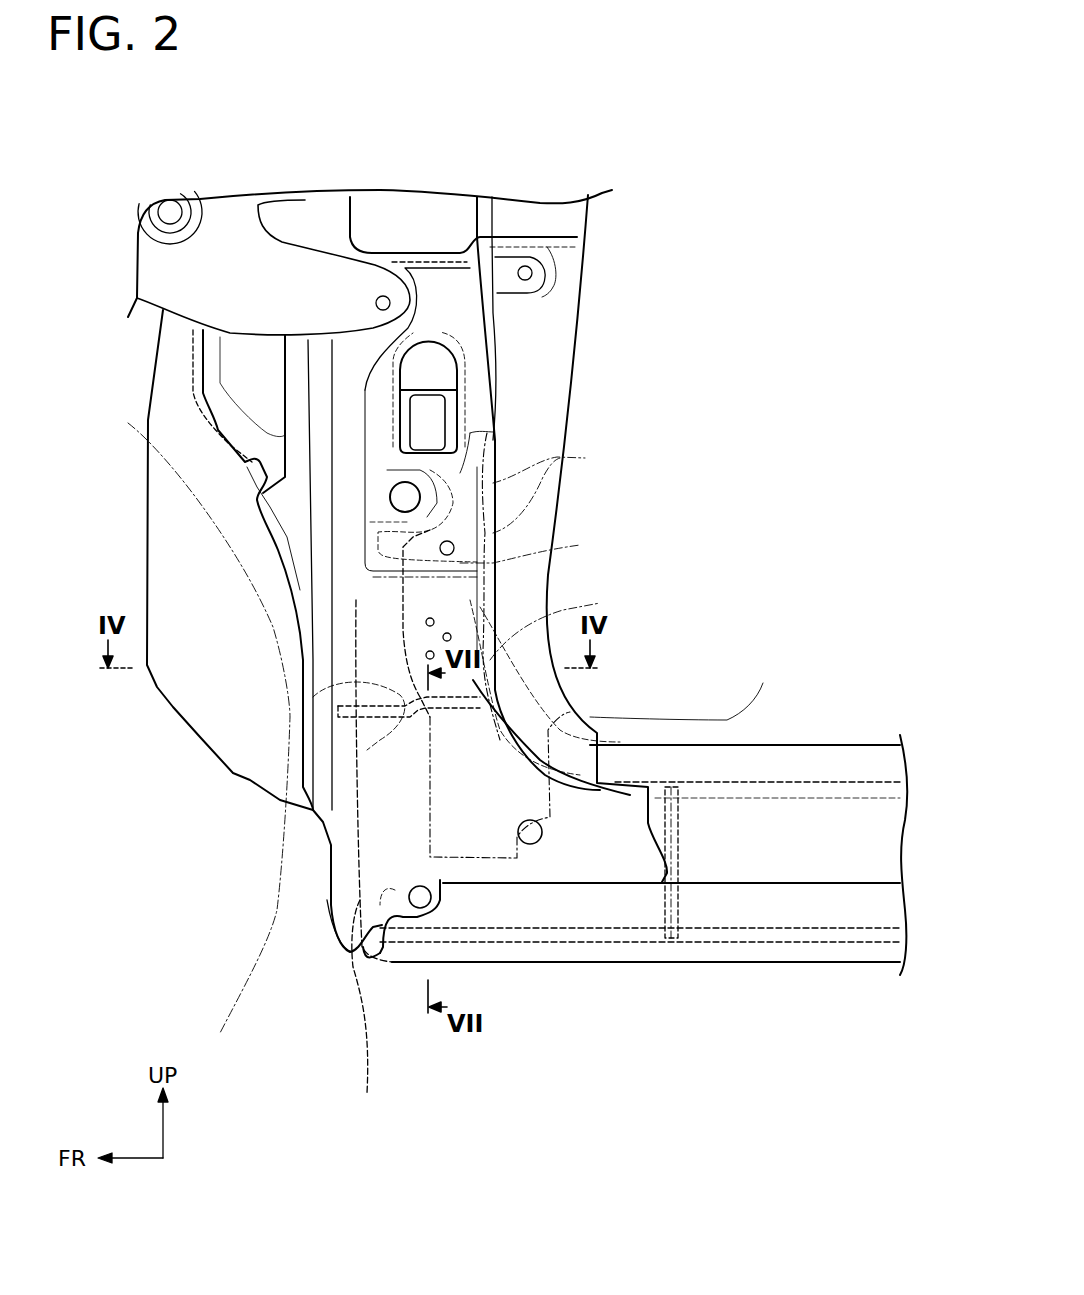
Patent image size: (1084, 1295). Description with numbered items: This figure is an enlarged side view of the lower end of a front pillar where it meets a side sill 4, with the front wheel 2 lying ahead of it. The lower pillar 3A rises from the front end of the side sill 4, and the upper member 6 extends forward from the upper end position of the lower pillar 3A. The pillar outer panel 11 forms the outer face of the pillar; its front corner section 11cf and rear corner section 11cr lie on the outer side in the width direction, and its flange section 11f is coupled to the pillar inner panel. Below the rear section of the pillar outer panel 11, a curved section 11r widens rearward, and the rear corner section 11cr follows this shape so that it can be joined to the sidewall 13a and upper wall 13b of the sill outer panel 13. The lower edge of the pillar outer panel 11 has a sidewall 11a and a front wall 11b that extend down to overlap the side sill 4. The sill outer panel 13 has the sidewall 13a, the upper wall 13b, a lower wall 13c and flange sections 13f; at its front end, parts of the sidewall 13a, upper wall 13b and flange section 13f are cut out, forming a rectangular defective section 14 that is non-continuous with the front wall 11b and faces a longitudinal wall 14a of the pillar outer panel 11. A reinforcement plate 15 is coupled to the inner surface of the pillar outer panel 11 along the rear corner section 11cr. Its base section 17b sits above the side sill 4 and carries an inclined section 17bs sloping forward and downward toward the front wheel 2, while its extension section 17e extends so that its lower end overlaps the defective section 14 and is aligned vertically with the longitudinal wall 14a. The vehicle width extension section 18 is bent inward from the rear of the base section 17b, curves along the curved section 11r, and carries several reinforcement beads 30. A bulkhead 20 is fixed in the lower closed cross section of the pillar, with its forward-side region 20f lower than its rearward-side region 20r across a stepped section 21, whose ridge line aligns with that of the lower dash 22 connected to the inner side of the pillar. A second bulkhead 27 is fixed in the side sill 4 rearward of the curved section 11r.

The front wheel 2 is at (243, 993).
The lower pillar 3A is at (567, 388).
The side sill 4 is at (648, 963).
The upper member 6 is at (236, 213).
The pillar outer panel 11 is at (480, 338).
The sidewall 11a is at (567, 860).
The front wall 11b is at (327, 920).
The front corner section 11cf is at (195, 413).
The rear corner section 11cr is at (493, 420).
The flange section 11f is at (283, 502).
The curved section 11r is at (685, 687).
The sill outer panel 13 is at (777, 857).
The sidewall 13a is at (873, 847).
The upper wall 13b is at (873, 787).
The lower wall 13c is at (880, 933).
The flange section 13f is at (827, 758).
The defective section 14 is at (369, 1008).
The longitudinal wall 14a is at (413, 900).
The reinforcement plate 15 is at (487, 582).
The base section 17b is at (413, 620).
The inclined section 17bs is at (437, 520).
The extension section 17e is at (330, 880).
The vehicle width extension section 18 is at (577, 625).
The bulkhead 20 is at (547, 740).
The forward-side region 20f is at (305, 790).
The rearward-side region 20r is at (467, 712).
The stepped section 21 is at (340, 693).
The lower dash 22 is at (176, 676).
The second bulkhead 27 is at (680, 915).
The reinforcement bead 30 is at (480, 612).